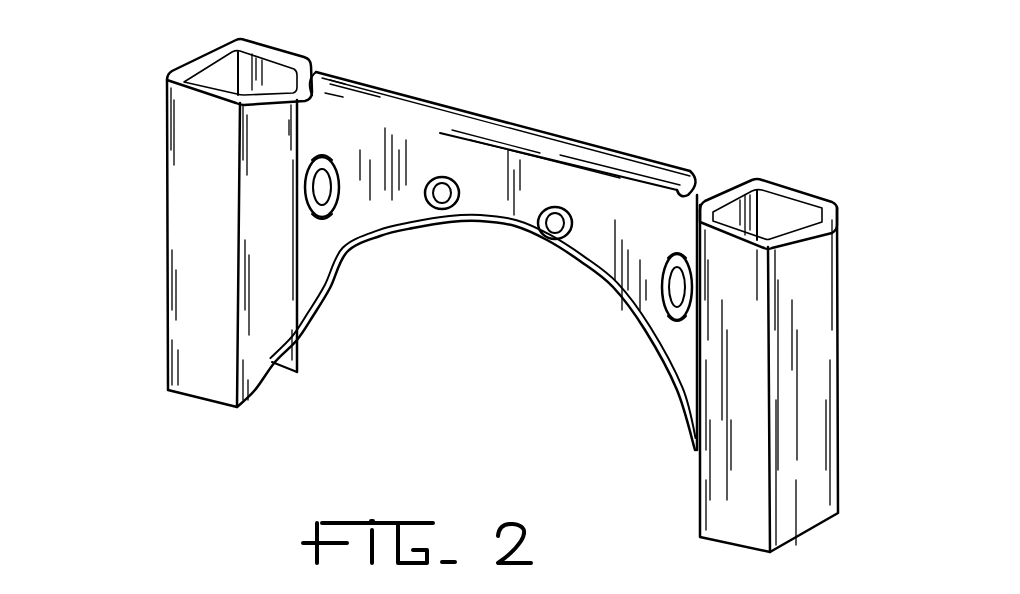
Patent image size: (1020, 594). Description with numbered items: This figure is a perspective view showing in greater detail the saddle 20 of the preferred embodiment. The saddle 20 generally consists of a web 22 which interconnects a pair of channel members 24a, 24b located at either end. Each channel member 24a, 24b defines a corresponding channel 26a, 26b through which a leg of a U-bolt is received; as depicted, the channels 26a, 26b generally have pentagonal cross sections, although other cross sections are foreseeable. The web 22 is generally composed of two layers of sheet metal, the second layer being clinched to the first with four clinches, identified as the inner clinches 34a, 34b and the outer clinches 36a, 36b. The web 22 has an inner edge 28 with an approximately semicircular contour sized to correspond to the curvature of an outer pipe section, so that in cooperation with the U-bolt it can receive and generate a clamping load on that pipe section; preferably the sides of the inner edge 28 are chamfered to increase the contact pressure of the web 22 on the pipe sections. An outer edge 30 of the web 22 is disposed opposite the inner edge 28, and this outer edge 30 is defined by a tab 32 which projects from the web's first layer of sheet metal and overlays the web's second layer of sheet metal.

The saddle 20 is at (138, 155).
The web 22 is at (530, 124).
The channel member 24a is at (197, 284).
The channel member 24b is at (807, 367).
The channel 26a is at (208, 84).
The channel 26b is at (790, 205).
The inner edge 28 is at (495, 232).
The outer edge 30 is at (380, 87).
The tab 32 is at (697, 170).
The inner clinch 34a is at (426, 205).
The inner clinch 34b is at (546, 240).
The outer clinch 36a is at (330, 212).
The outer clinch 36b is at (662, 300).